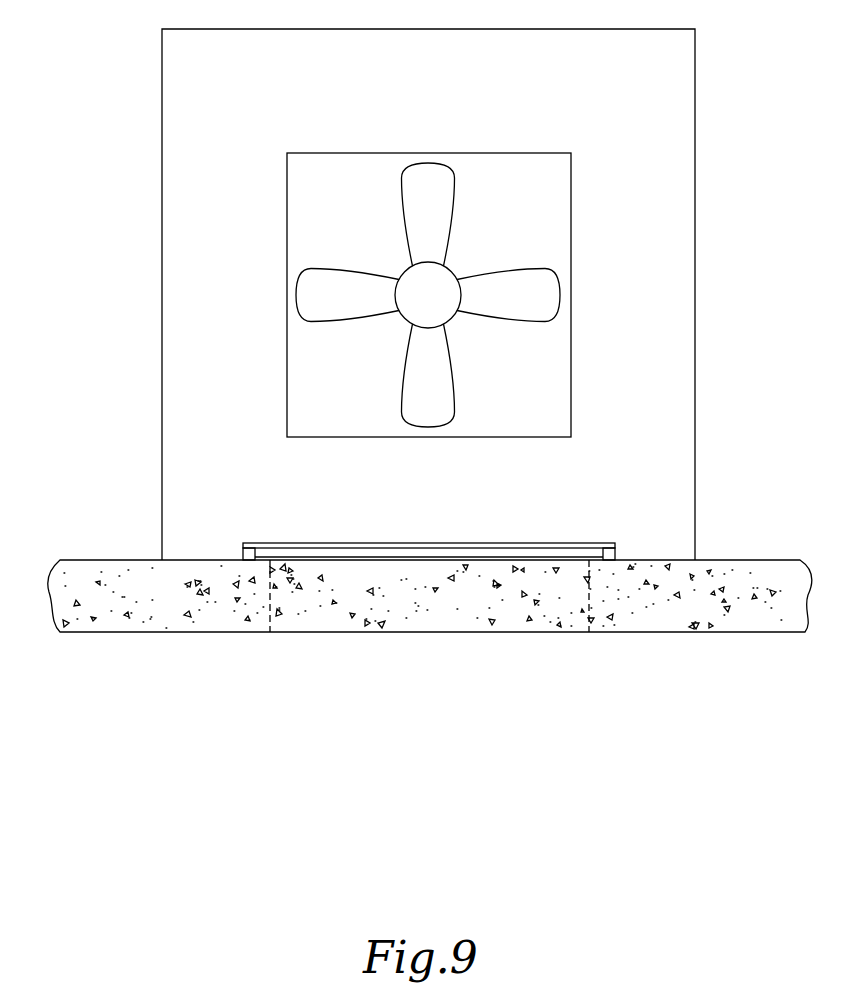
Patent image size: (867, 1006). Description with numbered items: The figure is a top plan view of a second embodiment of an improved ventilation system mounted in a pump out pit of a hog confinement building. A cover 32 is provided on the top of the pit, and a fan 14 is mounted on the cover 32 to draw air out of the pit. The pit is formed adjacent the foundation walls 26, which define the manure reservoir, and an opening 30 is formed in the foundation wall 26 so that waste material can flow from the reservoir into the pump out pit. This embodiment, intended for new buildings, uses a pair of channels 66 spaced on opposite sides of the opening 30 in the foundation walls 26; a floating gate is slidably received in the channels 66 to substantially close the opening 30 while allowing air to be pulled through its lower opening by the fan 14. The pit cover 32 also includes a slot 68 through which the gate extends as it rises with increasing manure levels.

The fan 14 is at (540, 291).
The foundation walls 26 is at (110, 620).
The opening 30 is at (460, 618).
The cover 32 is at (677, 96).
The channels 66 is at (243, 553).
The slot 68 is at (615, 548).